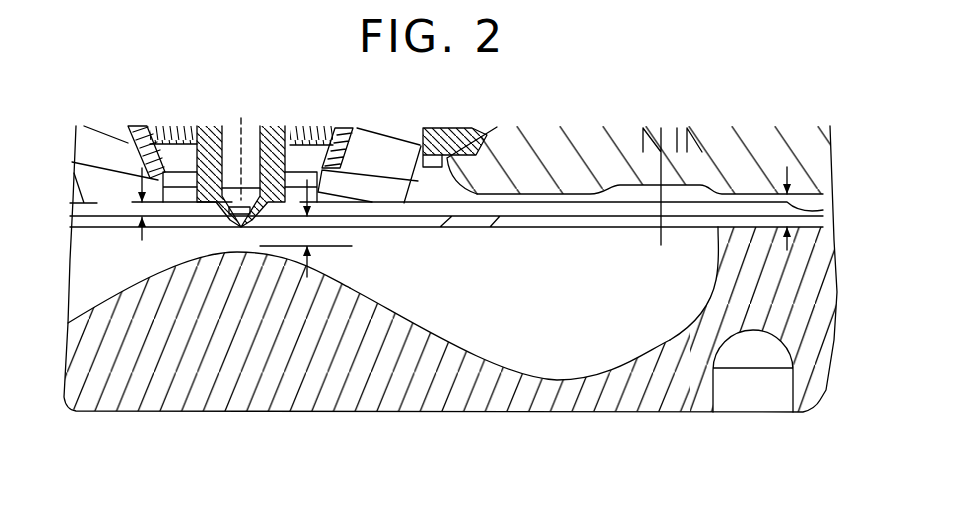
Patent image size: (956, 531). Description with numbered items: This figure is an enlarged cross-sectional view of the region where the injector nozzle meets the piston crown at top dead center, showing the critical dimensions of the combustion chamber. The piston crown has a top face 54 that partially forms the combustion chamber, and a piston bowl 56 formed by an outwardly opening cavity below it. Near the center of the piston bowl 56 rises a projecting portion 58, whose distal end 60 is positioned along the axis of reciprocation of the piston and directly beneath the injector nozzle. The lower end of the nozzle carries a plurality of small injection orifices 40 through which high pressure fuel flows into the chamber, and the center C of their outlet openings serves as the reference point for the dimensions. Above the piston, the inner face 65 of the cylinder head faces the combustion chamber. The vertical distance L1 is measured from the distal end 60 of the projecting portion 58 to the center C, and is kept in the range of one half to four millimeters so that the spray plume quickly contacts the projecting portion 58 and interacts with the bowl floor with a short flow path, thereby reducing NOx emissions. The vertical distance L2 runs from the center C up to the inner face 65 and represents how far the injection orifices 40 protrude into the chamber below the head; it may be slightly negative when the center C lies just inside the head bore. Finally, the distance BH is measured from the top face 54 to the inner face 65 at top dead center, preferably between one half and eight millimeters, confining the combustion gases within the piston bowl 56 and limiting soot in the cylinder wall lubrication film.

The top face 54 is at (721, 240).
The projecting portion 58 is at (210, 283).
The injection orifices 40 is at (232, 214).
The distal end 60 is at (250, 253).
The piston bowl 56 is at (510, 310).
The inner face 65 is at (688, 205).
The center of outlet openings C is at (250, 152).
The distance BH is at (827, 197).
The vertical distance L1 is at (306, 228).
The vertical distance L2 is at (132, 203).